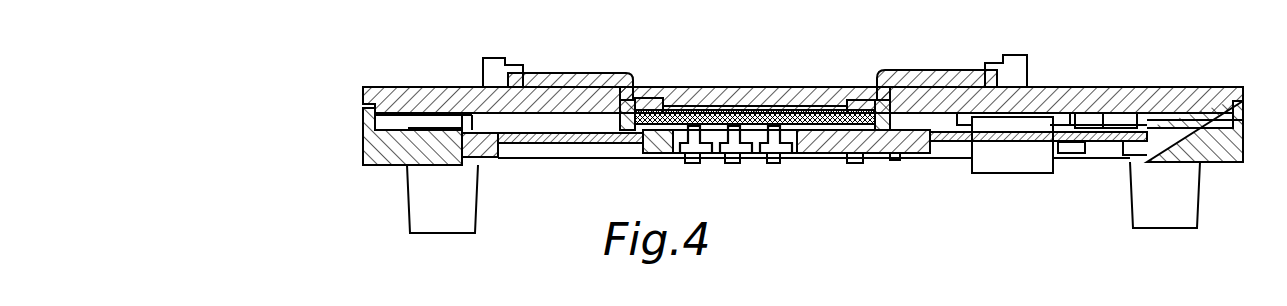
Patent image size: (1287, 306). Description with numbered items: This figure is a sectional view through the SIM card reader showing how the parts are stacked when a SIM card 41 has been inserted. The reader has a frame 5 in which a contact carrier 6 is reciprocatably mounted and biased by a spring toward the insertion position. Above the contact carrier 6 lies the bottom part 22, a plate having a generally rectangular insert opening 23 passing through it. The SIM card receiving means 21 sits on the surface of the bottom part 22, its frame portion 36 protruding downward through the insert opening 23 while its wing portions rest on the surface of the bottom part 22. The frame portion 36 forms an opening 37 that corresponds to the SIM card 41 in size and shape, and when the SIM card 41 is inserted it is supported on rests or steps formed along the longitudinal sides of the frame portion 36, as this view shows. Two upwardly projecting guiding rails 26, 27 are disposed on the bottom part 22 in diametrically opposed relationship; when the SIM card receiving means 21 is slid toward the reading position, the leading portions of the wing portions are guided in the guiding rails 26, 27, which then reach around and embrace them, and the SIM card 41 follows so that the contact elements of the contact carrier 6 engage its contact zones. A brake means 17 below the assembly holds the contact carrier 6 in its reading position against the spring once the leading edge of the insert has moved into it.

The frame 5 is at (388, 150).
The contact carrier 6 is at (830, 152).
The brake means 17 is at (1016, 176).
The SIM card receiving means 21 is at (585, 63).
The bottom part 22 is at (1103, 87).
The insert opening 23 is at (640, 86).
The guiding rail 26 is at (997, 62).
The guiding rail 27 is at (503, 58).
The frame portion 36 is at (910, 72).
The opening 37 is at (868, 88).
The SIM card 41 is at (712, 110).